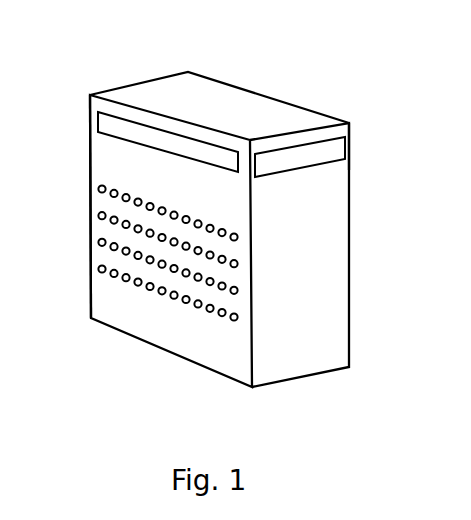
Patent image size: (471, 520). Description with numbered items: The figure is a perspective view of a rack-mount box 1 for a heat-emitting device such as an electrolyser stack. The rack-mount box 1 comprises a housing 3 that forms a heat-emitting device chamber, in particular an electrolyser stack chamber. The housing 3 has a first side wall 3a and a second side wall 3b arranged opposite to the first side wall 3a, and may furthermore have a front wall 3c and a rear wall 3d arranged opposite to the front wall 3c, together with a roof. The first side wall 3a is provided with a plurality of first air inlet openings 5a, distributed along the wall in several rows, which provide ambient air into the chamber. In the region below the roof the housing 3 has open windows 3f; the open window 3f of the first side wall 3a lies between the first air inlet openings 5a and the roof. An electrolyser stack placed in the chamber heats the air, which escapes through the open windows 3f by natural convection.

The rack-mount box 1 is at (411, 51).
The housing 3 is at (250, 101).
The first side wall 3a is at (130, 289).
The second side wall 3b is at (362, 178).
The front wall 3c is at (152, 82).
The rear wall 3d is at (84, 166).
The open windows 3f is at (362, 131).
The first air inlet openings 5a is at (132, 237).